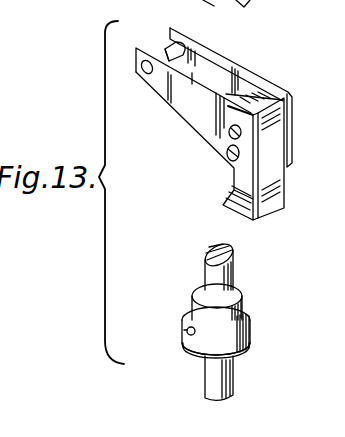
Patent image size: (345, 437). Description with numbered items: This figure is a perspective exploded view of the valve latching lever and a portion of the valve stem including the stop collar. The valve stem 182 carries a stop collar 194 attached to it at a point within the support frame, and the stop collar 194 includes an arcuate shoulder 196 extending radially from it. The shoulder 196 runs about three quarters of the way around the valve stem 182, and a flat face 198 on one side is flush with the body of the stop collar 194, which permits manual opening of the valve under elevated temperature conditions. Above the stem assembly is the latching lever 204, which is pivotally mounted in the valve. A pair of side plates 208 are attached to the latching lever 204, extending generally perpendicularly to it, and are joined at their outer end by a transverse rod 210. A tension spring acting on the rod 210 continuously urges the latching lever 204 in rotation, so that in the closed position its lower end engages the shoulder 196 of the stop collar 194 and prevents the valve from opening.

The valve stem 182 is at (232, 269).
The stop collar 194 is at (247, 305).
The arcuate shoulder 196 is at (253, 328).
The flat face 198 is at (191, 315).
The latching lever 204 is at (272, 197).
The side plates 208 is at (250, 72).
The transverse rod 210 is at (163, 46).